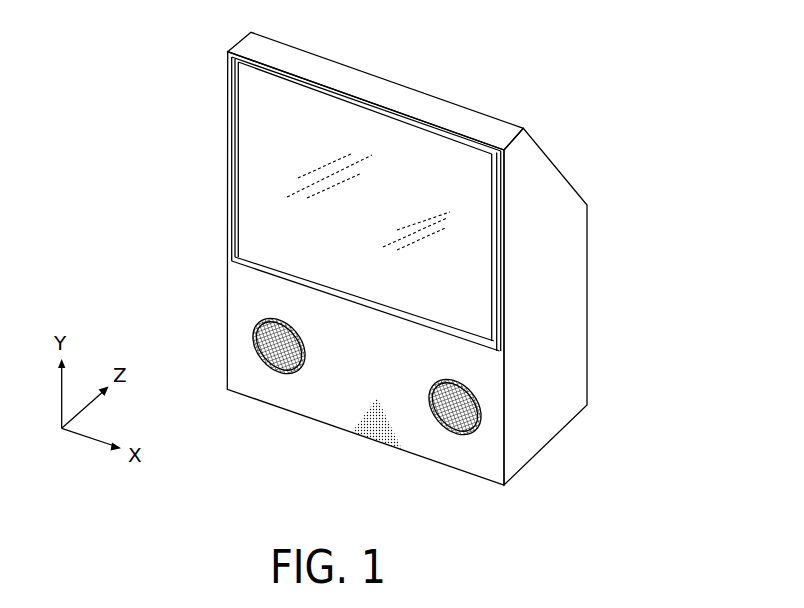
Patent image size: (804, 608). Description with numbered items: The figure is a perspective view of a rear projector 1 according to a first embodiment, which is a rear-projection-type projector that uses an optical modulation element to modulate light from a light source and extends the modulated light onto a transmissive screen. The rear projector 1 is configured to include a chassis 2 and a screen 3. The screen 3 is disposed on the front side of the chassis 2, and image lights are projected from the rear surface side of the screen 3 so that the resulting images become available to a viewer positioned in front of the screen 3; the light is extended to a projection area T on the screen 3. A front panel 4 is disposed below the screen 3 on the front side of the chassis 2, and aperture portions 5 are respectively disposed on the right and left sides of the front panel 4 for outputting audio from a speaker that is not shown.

The rear projector 1 is at (414, 244).
The chassis 2 is at (568, 342).
The screen 3 is at (222, 183).
The front panel 4 is at (322, 408).
The aperture portions 5 is at (264, 362).
The projection area T is at (384, 132).